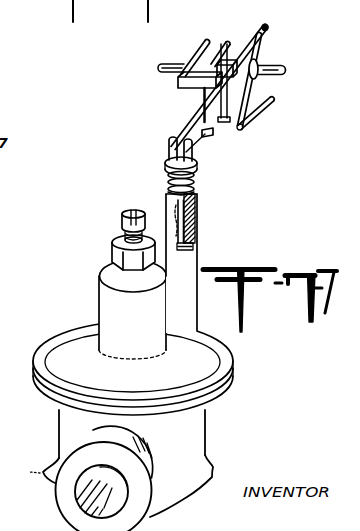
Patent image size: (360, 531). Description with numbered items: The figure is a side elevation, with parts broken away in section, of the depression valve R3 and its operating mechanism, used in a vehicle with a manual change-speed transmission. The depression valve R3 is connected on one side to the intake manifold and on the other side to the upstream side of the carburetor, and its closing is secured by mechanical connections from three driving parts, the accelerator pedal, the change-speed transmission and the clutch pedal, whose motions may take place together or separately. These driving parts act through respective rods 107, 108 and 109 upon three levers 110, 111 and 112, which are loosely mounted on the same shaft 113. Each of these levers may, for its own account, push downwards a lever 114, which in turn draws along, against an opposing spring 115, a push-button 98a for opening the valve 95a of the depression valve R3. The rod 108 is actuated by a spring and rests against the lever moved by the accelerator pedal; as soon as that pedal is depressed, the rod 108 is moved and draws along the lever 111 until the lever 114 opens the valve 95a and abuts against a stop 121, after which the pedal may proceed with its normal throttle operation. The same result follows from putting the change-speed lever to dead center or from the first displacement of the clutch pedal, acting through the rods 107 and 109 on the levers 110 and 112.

The rod 107 is at (266, 29).
The rod 108 is at (267, 62).
The rod 109 is at (273, 103).
The lever 110 is at (207, 42).
The lever 111 is at (229, 41).
The lever 112 is at (259, 36).
The shaft 113 is at (177, 63).
The lever 114 is at (201, 111).
The opposing spring 115 is at (191, 183).
The stop 121 is at (209, 135).
The push-button 98a is at (196, 212).
The valve 95a is at (193, 247).
The depression valve R3 is at (58, 412).